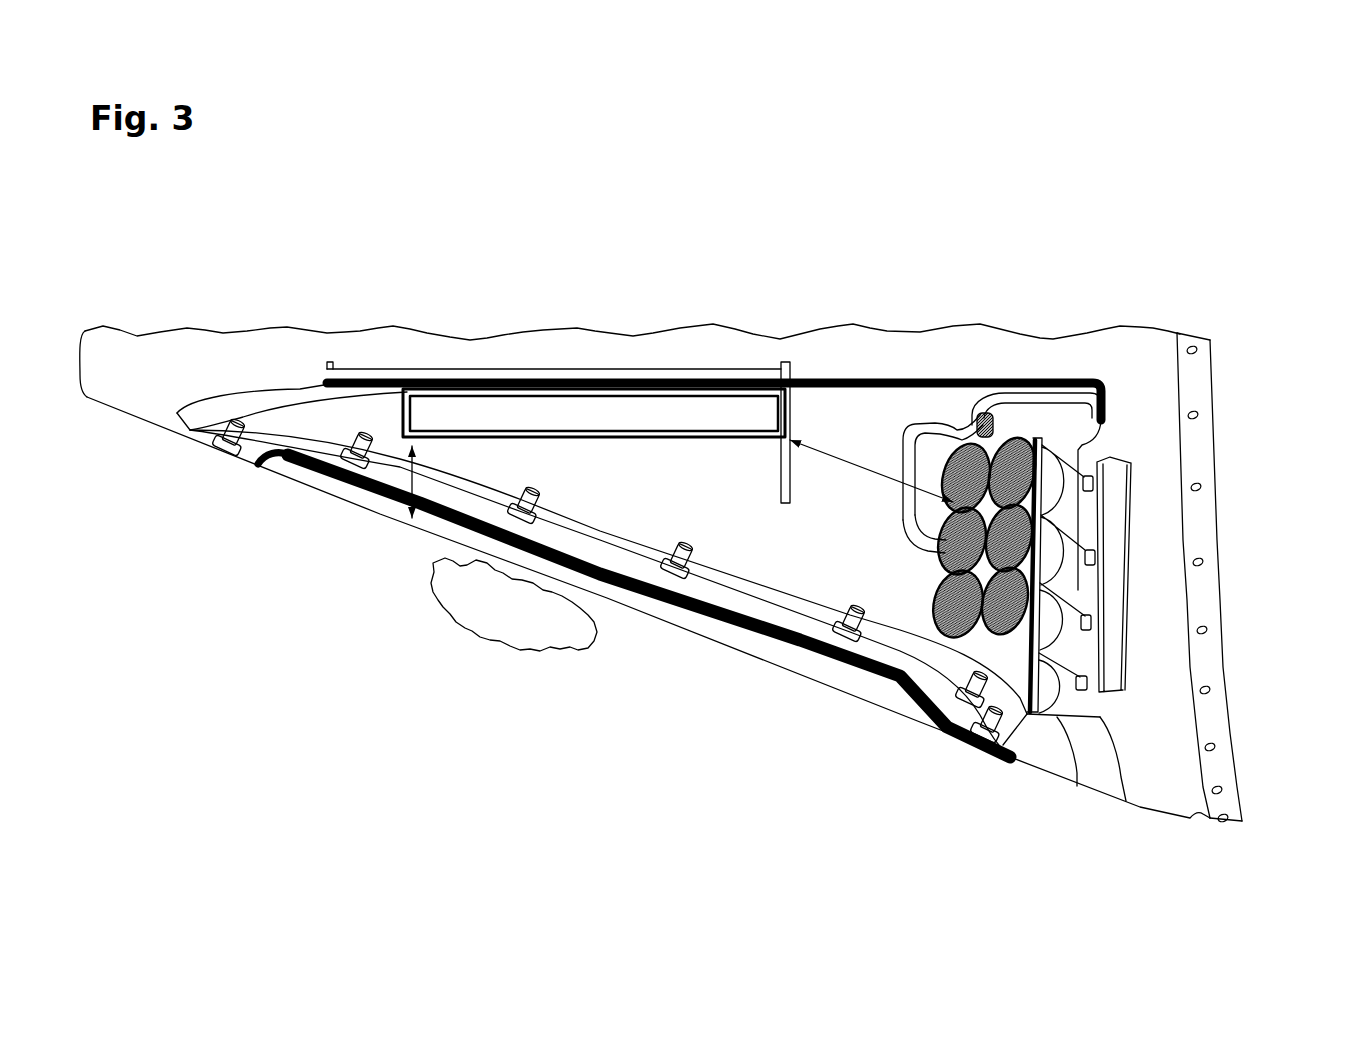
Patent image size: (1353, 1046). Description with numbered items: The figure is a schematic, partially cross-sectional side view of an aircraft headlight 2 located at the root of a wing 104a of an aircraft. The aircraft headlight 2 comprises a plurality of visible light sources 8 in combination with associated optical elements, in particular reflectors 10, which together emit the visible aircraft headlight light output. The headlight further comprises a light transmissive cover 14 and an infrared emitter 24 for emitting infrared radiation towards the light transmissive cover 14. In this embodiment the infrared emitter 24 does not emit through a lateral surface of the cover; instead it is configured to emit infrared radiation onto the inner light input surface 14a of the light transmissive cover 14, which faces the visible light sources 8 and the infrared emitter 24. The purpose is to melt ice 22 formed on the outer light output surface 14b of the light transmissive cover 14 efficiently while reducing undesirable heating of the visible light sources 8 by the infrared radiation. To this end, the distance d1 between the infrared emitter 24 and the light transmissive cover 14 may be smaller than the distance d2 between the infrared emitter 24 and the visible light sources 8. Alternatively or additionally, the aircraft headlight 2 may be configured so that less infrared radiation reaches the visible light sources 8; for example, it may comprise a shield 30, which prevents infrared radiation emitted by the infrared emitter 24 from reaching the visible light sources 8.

The aircraft headlight 2 is at (540, 750).
The visible light sources 8 is at (1106, 553).
The reflectors 10 is at (1193, 551).
The light transmissive cover 14 is at (740, 700).
The inner light input surface 14a is at (697, 618).
The outer light output surface 14b is at (836, 702).
The ice 22 is at (455, 660).
The infrared emitter 24 is at (631, 413).
The shield 30 is at (800, 477).
The wing 104a is at (1240, 240).
The distance between the infrared emitter and the light transmissive cover d1 is at (410, 477).
The distance between the infrared emitter and the visible light sources d2 is at (848, 477).